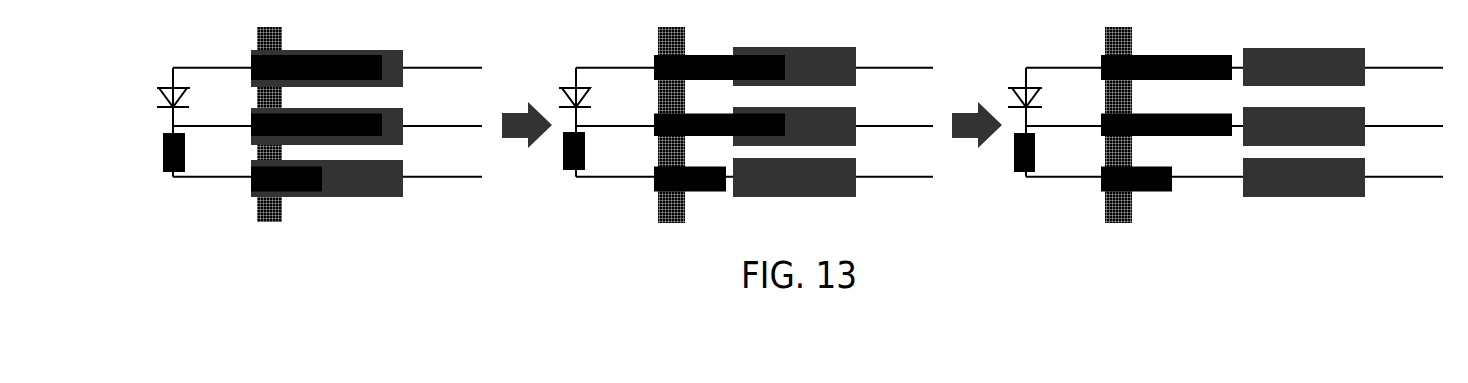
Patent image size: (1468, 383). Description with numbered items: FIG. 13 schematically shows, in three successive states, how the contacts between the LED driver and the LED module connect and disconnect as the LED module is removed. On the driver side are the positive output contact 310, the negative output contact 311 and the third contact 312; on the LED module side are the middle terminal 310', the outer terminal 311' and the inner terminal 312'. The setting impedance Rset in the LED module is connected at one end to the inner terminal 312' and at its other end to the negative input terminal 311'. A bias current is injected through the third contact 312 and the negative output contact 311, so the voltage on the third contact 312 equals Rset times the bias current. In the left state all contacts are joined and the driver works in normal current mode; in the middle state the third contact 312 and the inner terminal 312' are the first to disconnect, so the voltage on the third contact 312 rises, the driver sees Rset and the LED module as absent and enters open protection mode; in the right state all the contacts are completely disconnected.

The positive output contact 310 is at (847, 64).
The negative output contact 311 is at (847, 121).
The third contact 312 is at (847, 174).
The middle terminal 310' is at (639, 51).
The outer terminal 311' is at (639, 107).
The inner terminal 312' is at (639, 160).
The setting impedance Rset is at (563, 171).